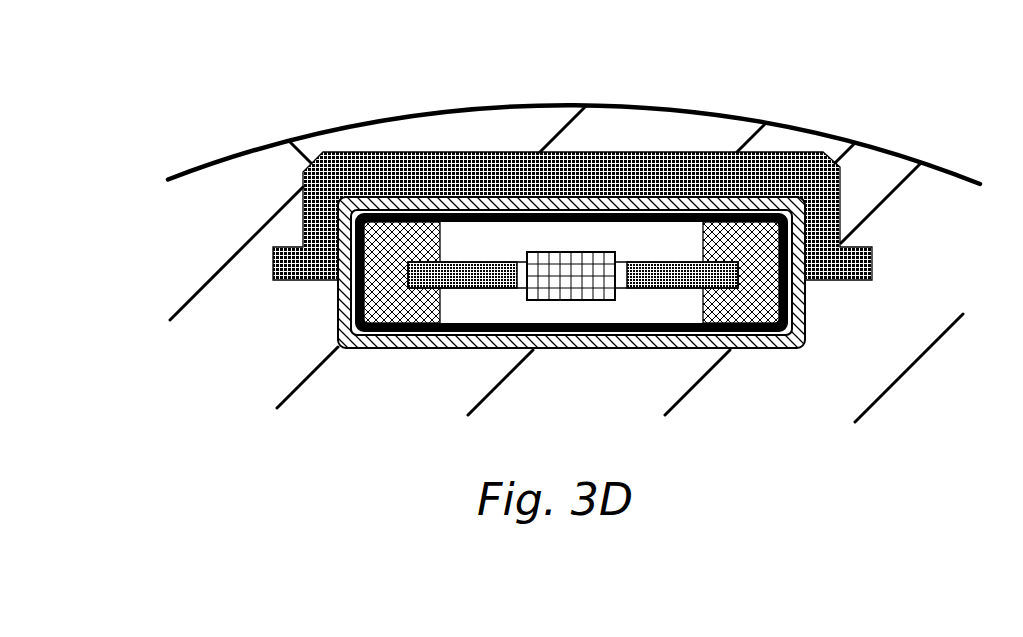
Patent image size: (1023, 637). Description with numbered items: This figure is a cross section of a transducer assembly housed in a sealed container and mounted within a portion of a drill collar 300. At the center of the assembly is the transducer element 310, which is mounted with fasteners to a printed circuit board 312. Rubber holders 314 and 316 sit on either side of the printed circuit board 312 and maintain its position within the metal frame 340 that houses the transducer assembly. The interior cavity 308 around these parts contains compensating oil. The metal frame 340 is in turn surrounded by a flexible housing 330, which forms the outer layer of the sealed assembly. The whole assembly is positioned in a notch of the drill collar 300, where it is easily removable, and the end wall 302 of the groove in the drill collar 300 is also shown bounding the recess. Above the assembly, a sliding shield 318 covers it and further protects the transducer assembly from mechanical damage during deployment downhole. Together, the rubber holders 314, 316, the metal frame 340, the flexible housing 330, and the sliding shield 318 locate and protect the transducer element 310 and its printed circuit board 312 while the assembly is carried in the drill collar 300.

The drill collar 300 is at (937, 240).
The end wall 302 is at (690, 117).
The sliding shield 318 is at (437, 157).
The flexible housing 330 is at (559, 348).
The metal frame 340 is at (785, 310).
The cavity 308 is at (510, 251).
The rubber holder 316 is at (383, 298).
The rubber holder 314 is at (755, 307).
The printed circuit board 312 is at (460, 275).
The transducer element 310 is at (603, 300).